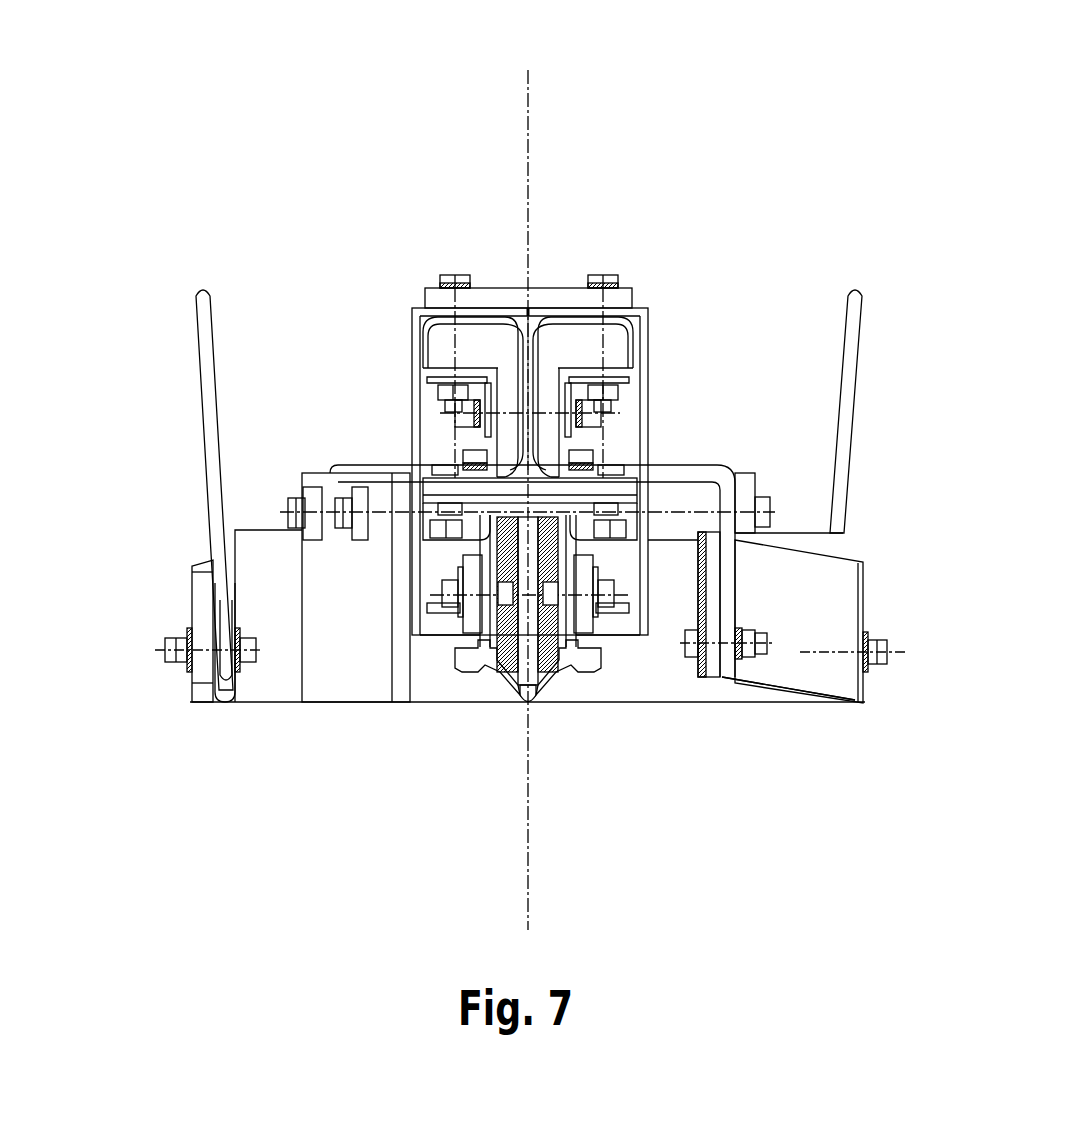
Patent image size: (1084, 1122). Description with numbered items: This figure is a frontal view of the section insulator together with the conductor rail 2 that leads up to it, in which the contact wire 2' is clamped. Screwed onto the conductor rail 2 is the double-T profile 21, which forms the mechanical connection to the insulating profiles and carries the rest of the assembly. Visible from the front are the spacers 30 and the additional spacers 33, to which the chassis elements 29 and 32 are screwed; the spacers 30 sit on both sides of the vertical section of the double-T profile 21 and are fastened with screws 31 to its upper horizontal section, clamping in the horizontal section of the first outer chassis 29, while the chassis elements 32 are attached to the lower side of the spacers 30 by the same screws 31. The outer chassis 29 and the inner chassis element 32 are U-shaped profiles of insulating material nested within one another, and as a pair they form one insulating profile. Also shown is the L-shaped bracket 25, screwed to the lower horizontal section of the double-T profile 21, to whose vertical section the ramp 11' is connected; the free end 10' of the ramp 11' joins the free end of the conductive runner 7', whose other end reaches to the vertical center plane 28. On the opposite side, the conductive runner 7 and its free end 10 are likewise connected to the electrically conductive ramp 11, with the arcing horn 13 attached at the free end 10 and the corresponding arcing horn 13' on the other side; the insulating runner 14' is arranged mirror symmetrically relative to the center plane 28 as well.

The conductor rail 2 is at (539, 677).
The contact wire 2' is at (526, 738).
The conductive runner 7 is at (268, 683).
The conductive runner 7' is at (735, 685).
The free end 10 is at (207, 732).
The free end 10' is at (858, 734).
The electrically conductive ramp 11 is at (141, 631).
The ramp 11' is at (792, 688).
The arcing horn 13 is at (214, 406).
The arcing horn 13' is at (857, 322).
The insulating runner 14' is at (349, 655).
The double-T profile 21 is at (541, 298).
The L-shaped bracket 25 is at (727, 615).
The vertical center plane 28 is at (530, 75).
The first outer chassis 29 is at (411, 325).
The spacers 30 is at (498, 350).
The screws 31 is at (440, 277).
The chassis elements 32 is at (490, 417).
The spacers 33 is at (507, 428).